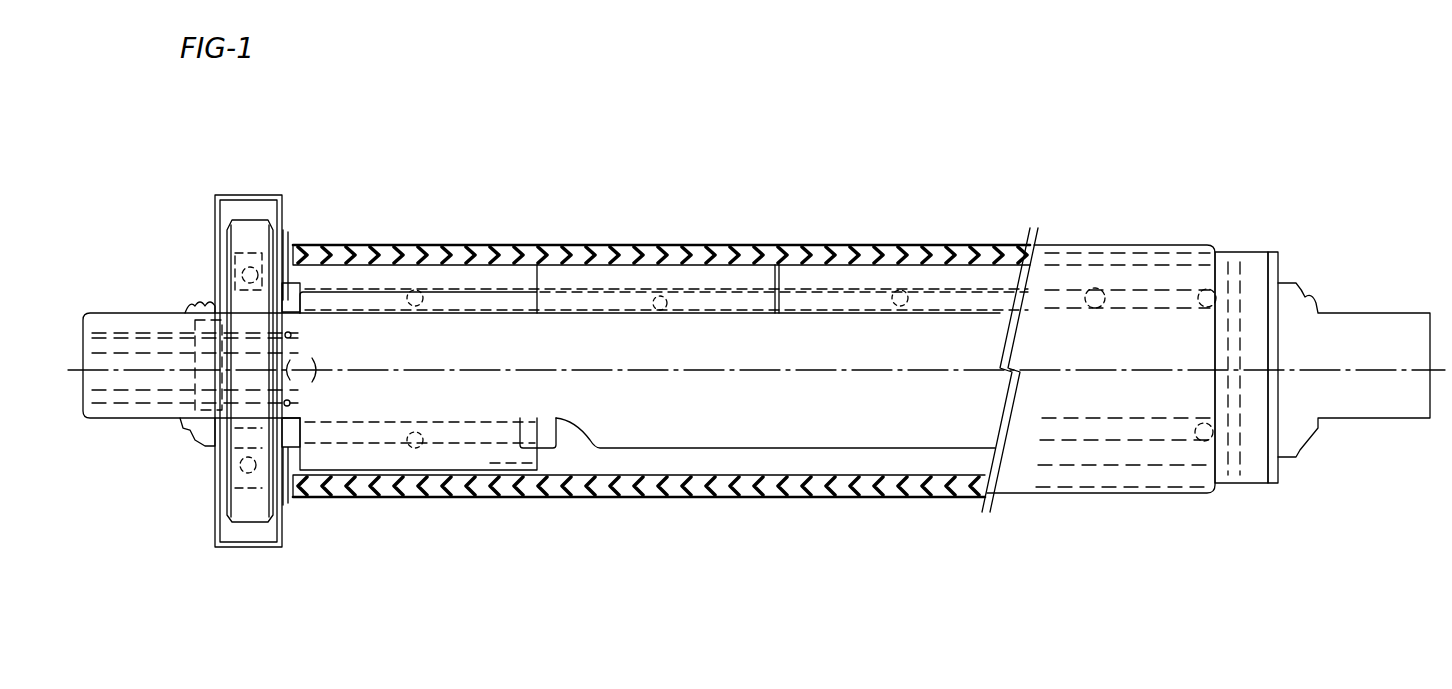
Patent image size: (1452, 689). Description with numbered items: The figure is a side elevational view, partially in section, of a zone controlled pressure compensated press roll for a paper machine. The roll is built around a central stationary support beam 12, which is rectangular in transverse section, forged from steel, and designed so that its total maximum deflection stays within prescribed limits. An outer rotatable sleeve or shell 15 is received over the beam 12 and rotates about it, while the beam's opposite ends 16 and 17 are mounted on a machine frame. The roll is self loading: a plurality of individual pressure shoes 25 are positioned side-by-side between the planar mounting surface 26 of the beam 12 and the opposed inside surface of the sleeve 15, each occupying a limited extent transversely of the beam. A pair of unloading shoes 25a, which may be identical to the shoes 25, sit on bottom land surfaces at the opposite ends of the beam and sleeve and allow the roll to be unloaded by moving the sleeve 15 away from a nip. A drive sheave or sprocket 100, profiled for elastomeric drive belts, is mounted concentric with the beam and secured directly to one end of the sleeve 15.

The drive sheave or sprocket 100 is at (245, 237).
The pressure shoes 25 is at (623, 275).
The unloading shoes 25a is at (414, 455).
The outer rotatable sleeve or shell 15 is at (750, 246).
The beam end 16 is at (1373, 323).
The beam end 17 is at (157, 416).
The central stationary support beam 12 is at (878, 357).
The mounting surface 26 is at (663, 307).